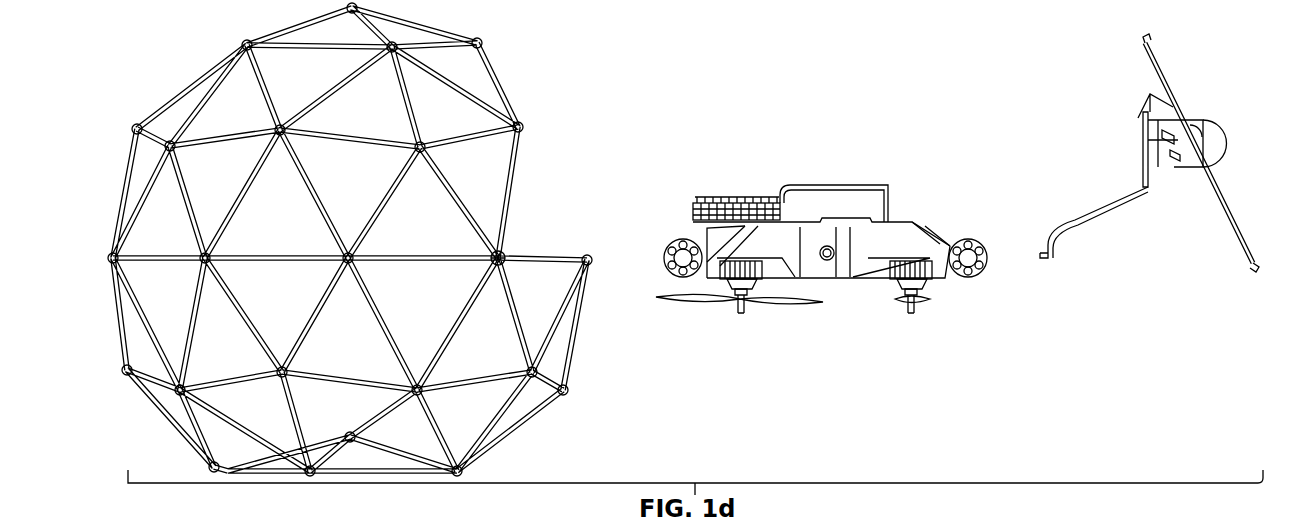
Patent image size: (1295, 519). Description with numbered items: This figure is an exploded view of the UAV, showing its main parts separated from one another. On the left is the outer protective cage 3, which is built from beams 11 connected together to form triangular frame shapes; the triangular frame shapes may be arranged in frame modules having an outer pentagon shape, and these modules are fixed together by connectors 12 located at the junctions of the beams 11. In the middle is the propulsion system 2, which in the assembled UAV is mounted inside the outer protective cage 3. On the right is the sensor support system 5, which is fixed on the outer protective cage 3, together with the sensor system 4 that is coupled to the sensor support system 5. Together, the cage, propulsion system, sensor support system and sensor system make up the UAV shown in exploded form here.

The propulsion system 2 is at (830, 142).
The outer protective cage 3 is at (685, 261).
The sensor system 4 is at (1220, 132).
The sensor support system 5 is at (1170, 92).
The beams 11 is at (513, 189).
The connectors 12 is at (502, 253).